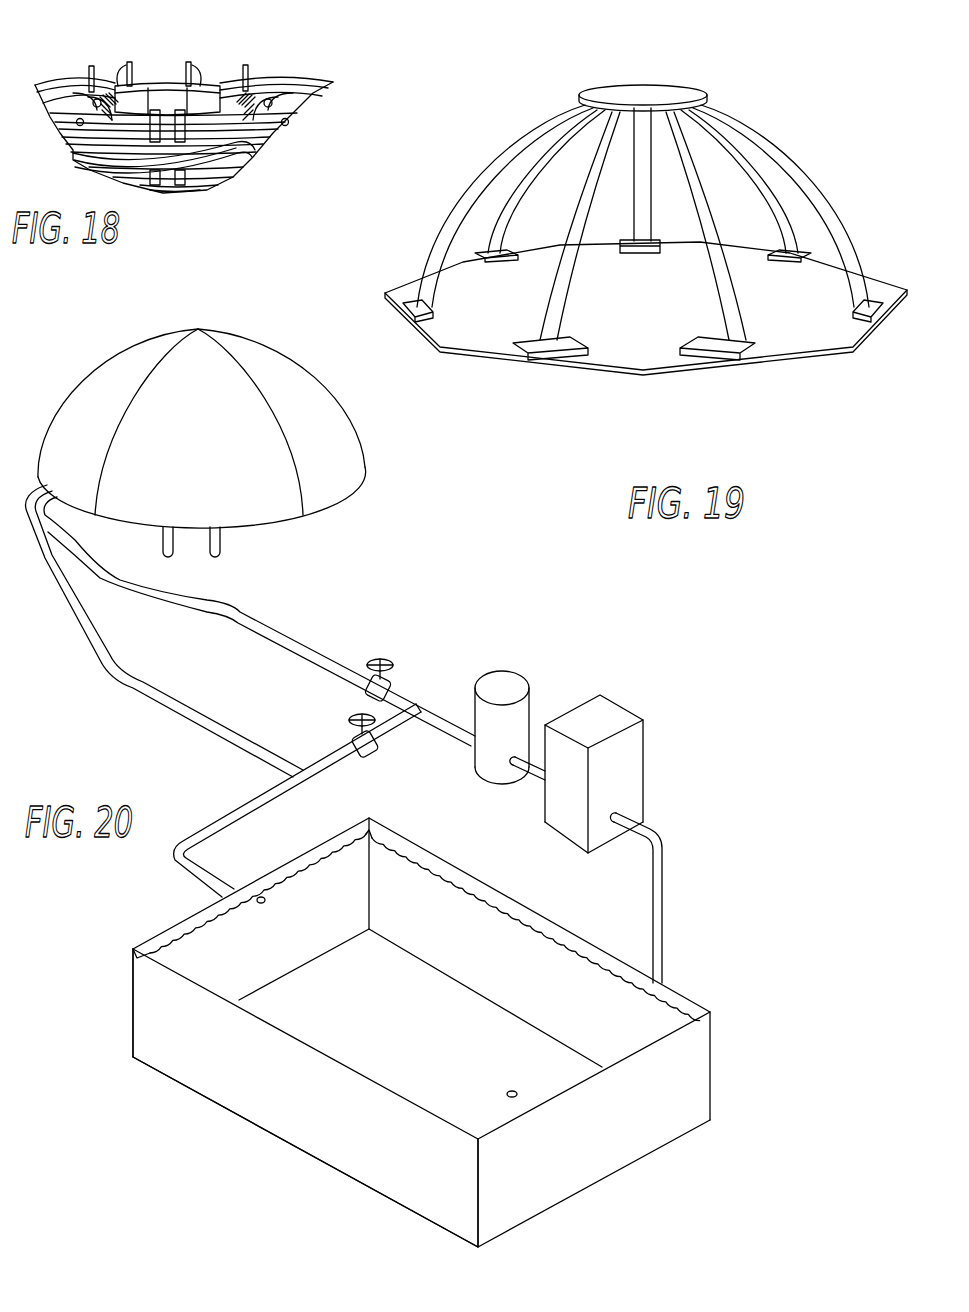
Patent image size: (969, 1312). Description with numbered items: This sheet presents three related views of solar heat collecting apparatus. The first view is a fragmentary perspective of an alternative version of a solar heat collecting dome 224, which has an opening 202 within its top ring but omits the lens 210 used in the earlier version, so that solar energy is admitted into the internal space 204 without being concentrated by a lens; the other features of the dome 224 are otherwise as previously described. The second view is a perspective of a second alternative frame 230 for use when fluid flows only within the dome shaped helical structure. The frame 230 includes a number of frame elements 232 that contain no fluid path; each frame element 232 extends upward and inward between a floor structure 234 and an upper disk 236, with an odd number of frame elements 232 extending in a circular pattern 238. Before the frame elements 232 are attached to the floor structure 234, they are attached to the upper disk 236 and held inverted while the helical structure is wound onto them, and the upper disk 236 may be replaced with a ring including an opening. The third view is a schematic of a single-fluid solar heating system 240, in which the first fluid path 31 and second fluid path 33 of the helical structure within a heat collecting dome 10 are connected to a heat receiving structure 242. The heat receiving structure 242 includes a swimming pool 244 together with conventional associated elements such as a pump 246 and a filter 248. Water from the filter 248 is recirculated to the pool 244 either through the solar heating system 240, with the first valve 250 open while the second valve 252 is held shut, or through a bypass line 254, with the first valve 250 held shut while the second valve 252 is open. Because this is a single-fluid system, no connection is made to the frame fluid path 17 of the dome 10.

In FIG. 20, the heat collecting dome 10 is at (117, 355).
In FIG. 20, the frame fluid path 17 is at (172, 555).
In FIG. 20, the first fluid path 31 is at (47, 515).
In FIG. 20, the second fluid path 33 is at (30, 530).
In FIG. 18, the opening 202 is at (148, 86).
In FIG. 18, the internal space 204 is at (225, 152).
In FIG. 18, the lens 210 is at (235, 82).
In FIG. 18, the solar heat collecting dome 224 is at (62, 68).
In FIG. 19, the second alternative frame 230 is at (463, 170).
In FIG. 19, the frame elements 232 is at (710, 187).
In FIG. 19, the floor structure 234 is at (480, 353).
In FIG. 19, the upper disk 236 is at (707, 94).
In FIG. 19, the circular pattern 238 is at (797, 310).
In FIG. 20, the single-fluid solar heating system 240 is at (357, 535).
In FIG. 20, the heat receiving structure 242 is at (247, 1165).
In FIG. 20, the swimming pool 244 is at (194, 1086).
In FIG. 20, the pump 246 is at (645, 737).
In FIG. 20, the filter 248 is at (528, 678).
In FIG. 20, the first valve 250 is at (388, 657).
In FIG. 20, the second valve 252 is at (353, 712).
In FIG. 20, the bypass line 254 is at (207, 820).